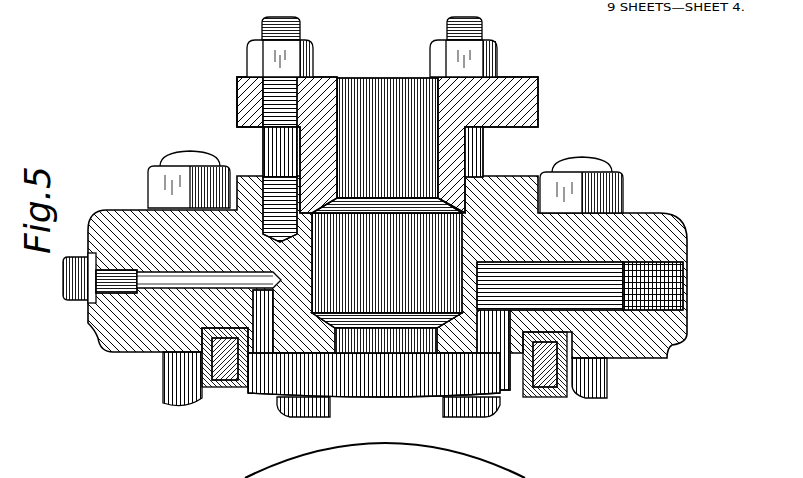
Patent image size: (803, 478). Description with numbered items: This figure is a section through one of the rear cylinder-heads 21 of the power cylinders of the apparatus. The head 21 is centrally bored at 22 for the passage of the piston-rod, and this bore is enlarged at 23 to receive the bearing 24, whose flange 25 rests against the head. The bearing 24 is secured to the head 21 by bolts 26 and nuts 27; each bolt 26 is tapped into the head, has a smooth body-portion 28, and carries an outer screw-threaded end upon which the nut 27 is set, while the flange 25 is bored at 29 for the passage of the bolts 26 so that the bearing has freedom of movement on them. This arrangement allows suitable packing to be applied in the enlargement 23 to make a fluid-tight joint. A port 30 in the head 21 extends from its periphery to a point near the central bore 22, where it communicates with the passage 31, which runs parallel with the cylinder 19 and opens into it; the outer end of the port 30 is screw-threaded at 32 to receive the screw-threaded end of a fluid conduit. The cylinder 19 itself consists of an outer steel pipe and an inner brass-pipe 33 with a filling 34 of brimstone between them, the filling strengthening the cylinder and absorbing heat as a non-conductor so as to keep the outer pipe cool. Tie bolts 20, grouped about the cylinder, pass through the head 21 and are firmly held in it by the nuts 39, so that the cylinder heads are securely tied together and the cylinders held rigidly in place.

The power cylinder 19 is at (217, 387).
The bolt 20 is at (280, 415).
The rear cylinder-head 21 is at (120, 220).
The central bore 22 is at (368, 348).
The enlargement of the bore 23 is at (395, 293).
The bearing 24 is at (374, 80).
The flange 25 is at (527, 100).
The bolt 26 is at (300, 28).
The nut 27 is at (262, 57).
The smooth body-portion 28 is at (267, 140).
The bore in flange 29 is at (263, 98).
The port 30 is at (605, 295).
The passage 31 is at (495, 342).
The screw-threaded end of port 32 is at (685, 280).
The inner brass-pipe 33 is at (258, 388).
The filling 34 is at (562, 397).
The nut 39 is at (173, 200).